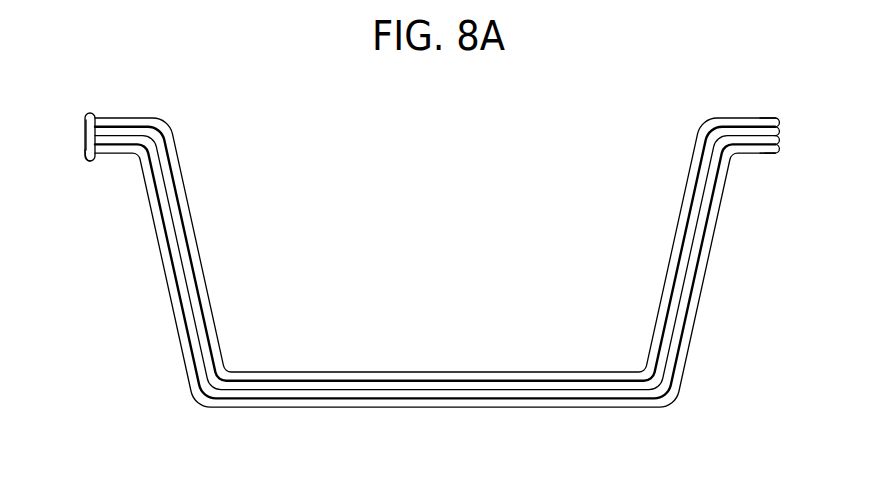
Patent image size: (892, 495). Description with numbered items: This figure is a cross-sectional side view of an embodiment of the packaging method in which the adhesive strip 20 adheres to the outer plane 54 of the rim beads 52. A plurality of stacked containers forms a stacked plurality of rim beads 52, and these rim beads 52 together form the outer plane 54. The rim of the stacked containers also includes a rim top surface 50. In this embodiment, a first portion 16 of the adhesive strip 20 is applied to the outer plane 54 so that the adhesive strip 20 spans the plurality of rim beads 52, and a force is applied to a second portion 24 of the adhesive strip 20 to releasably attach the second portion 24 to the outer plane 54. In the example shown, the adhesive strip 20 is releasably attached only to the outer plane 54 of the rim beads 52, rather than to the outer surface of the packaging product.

The first portion 16 is at (87, 158).
The adhesive strip 20 is at (85, 133).
The second portion 24 is at (86, 113).
The rim top surface 50 is at (95, 110).
The rim beads 52 is at (783, 115).
The outer plane 54 is at (773, 162).